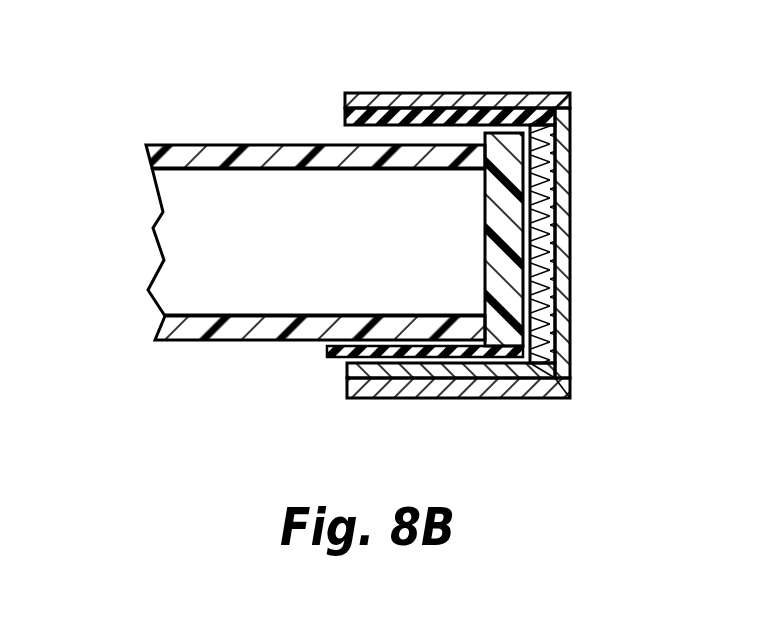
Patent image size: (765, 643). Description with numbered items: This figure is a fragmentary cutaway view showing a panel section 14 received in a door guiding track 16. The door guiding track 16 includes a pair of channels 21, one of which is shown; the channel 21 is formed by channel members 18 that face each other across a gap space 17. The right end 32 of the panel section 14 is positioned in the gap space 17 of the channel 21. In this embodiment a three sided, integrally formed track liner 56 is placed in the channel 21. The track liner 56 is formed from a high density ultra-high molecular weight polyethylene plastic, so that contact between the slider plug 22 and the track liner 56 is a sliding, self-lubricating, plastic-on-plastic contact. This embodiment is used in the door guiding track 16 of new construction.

The panel section 14 is at (376, 297).
The door guiding track 16 is at (501, 245).
The gap space 17 is at (335, 355).
The channel members 18 is at (436, 100).
The channel 21 is at (572, 368).
The slider plug 22 is at (500, 195).
The right end 32 is at (448, 282).
The track liner 56 is at (543, 140).